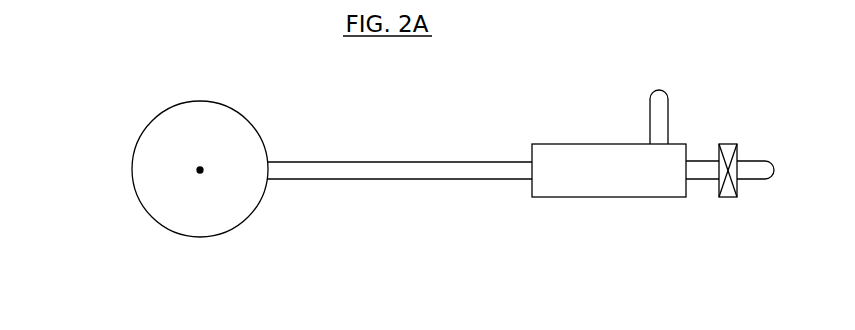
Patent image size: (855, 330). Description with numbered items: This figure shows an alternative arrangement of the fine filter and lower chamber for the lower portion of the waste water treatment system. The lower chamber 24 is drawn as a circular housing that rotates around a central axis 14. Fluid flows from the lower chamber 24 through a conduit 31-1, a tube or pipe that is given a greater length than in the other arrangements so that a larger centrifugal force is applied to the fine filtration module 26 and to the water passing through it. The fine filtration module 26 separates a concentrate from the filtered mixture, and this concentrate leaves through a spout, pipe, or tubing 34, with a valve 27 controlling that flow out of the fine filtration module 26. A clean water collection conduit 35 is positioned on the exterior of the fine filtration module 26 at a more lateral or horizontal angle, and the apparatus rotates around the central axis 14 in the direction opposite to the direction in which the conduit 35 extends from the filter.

The lower chamber 24 is at (132, 148).
The central axis 14 is at (200, 175).
The conduit 31-1 is at (340, 182).
The fine filtration module 26 is at (592, 198).
The clean water collection conduit 35 is at (648, 115).
The spout, pipe, or tubing 34 is at (702, 180).
The valve 27 is at (728, 143).